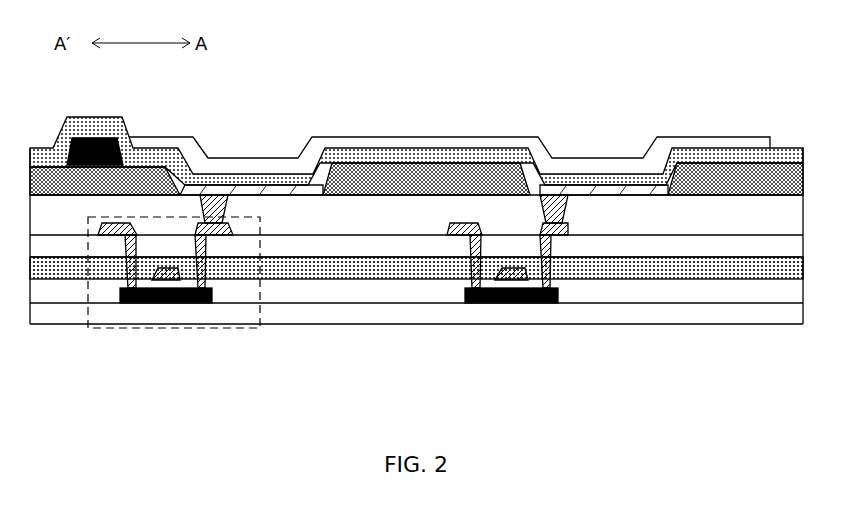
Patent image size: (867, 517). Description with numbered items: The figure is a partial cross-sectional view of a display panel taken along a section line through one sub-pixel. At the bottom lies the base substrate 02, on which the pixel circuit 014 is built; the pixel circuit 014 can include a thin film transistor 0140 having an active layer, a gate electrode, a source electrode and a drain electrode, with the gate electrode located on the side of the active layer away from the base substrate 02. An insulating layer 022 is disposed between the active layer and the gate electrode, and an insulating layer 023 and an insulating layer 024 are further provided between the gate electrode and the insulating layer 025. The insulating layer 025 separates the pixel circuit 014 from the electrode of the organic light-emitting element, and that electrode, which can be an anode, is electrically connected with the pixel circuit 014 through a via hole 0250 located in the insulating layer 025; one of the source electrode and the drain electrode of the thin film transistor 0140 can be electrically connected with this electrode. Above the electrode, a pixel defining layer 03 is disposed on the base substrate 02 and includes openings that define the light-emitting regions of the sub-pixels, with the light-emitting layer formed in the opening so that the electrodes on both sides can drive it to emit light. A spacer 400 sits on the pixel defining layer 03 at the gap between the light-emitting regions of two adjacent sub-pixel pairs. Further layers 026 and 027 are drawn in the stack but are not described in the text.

The base substrate 02 is at (352, 310).
The insulating layer 022 is at (443, 290).
The insulating layer 023 is at (663, 270).
The insulating layer 024 is at (710, 243).
The insulating layer 025 is at (755, 218).
The via hole 0250 is at (562, 215).
The pixel circuit 014 is at (170, 328).
The thin film transistor 0140 is at (220, 304).
The pixel defining layer 03 is at (50, 167).
The spacer 400 is at (97, 160).
The insulating layer 026 is at (295, 175).
The electrode layer 027 is at (737, 167).